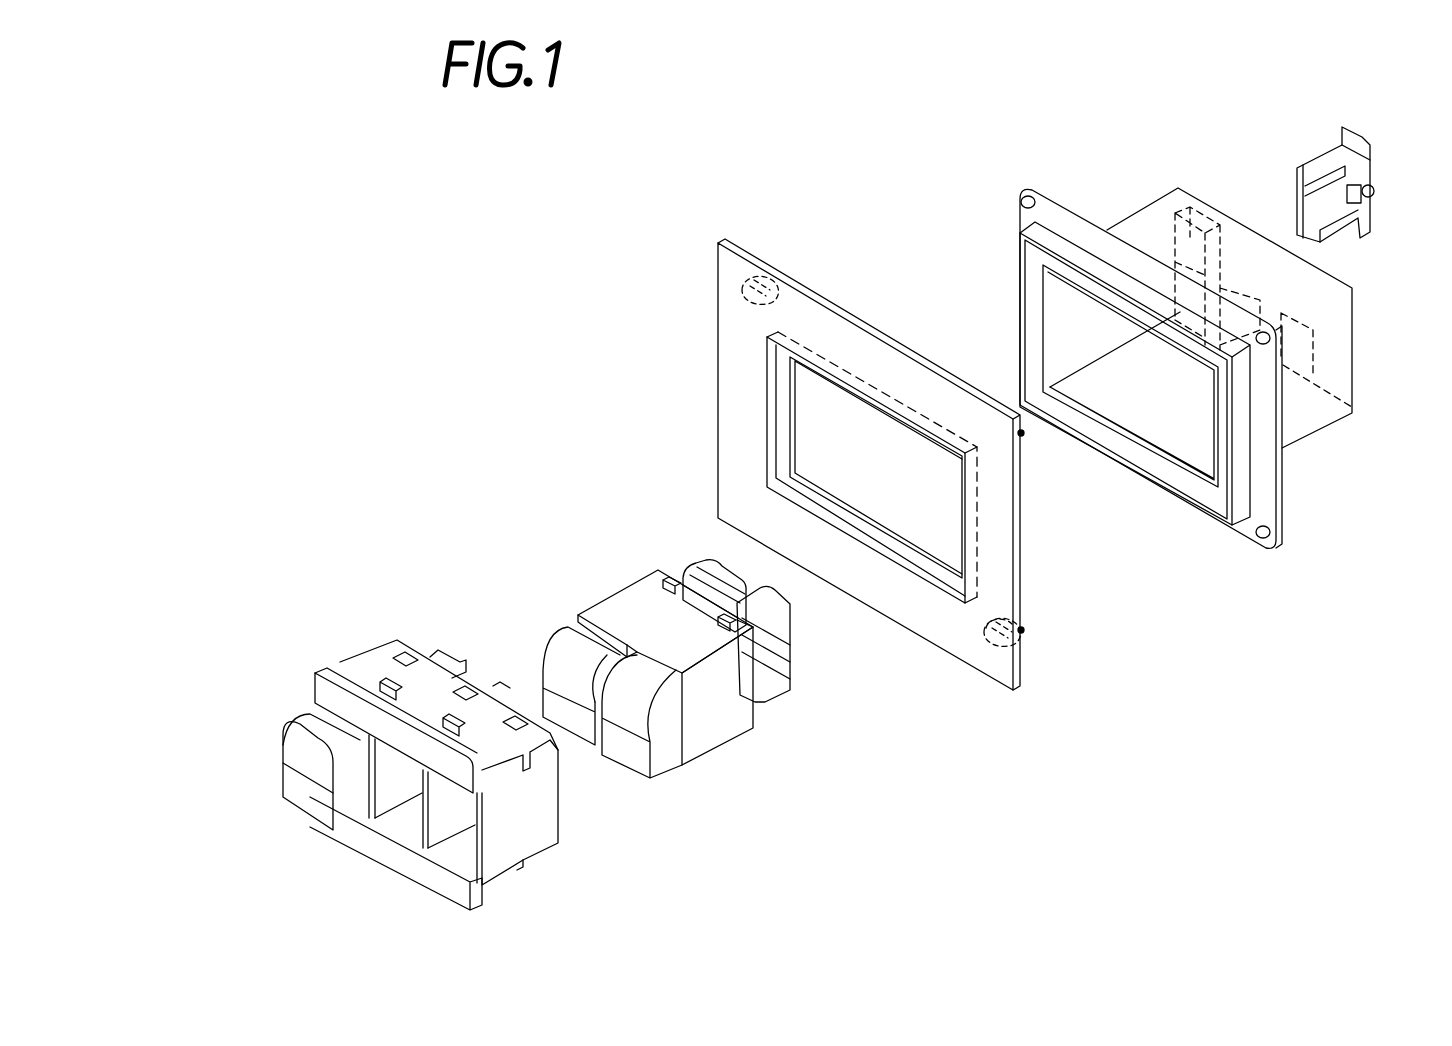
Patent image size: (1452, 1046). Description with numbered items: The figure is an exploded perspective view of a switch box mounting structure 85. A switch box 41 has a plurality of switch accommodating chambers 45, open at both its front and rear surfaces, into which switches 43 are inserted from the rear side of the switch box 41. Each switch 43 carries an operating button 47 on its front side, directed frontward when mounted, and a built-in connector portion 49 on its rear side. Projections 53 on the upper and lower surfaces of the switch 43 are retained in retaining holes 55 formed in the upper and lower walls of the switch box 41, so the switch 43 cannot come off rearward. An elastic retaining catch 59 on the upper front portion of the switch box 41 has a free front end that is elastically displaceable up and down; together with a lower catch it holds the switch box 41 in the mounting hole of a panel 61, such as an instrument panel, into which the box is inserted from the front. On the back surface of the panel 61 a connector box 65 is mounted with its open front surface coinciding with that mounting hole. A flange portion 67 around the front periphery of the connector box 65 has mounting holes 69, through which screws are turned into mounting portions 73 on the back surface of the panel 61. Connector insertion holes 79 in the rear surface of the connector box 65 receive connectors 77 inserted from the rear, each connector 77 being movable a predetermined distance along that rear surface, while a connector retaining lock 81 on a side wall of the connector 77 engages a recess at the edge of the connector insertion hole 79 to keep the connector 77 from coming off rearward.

The switch box 41 is at (353, 732).
The switch 43 is at (720, 709).
The switch accommodating chamber 45 is at (453, 860).
The operating button 47 is at (640, 768).
The built-in connector portion 49 is at (790, 668).
The projection 53 is at (660, 586).
The retaining hole 55 is at (408, 652).
The elastic retaining catch 59 is at (378, 666).
The panel 61 is at (715, 372).
The connector box 65 is at (1121, 214).
The flange portion 67 is at (1268, 500).
The mounting hole 69 is at (1258, 544).
The mounting portion 73 is at (1024, 634).
The connector 77 is at (1308, 153).
The connector insertion hole 79 is at (1232, 238).
The connector retaining lock 81 is at (1374, 190).
The switch box mounting structure 85 is at (946, 720).